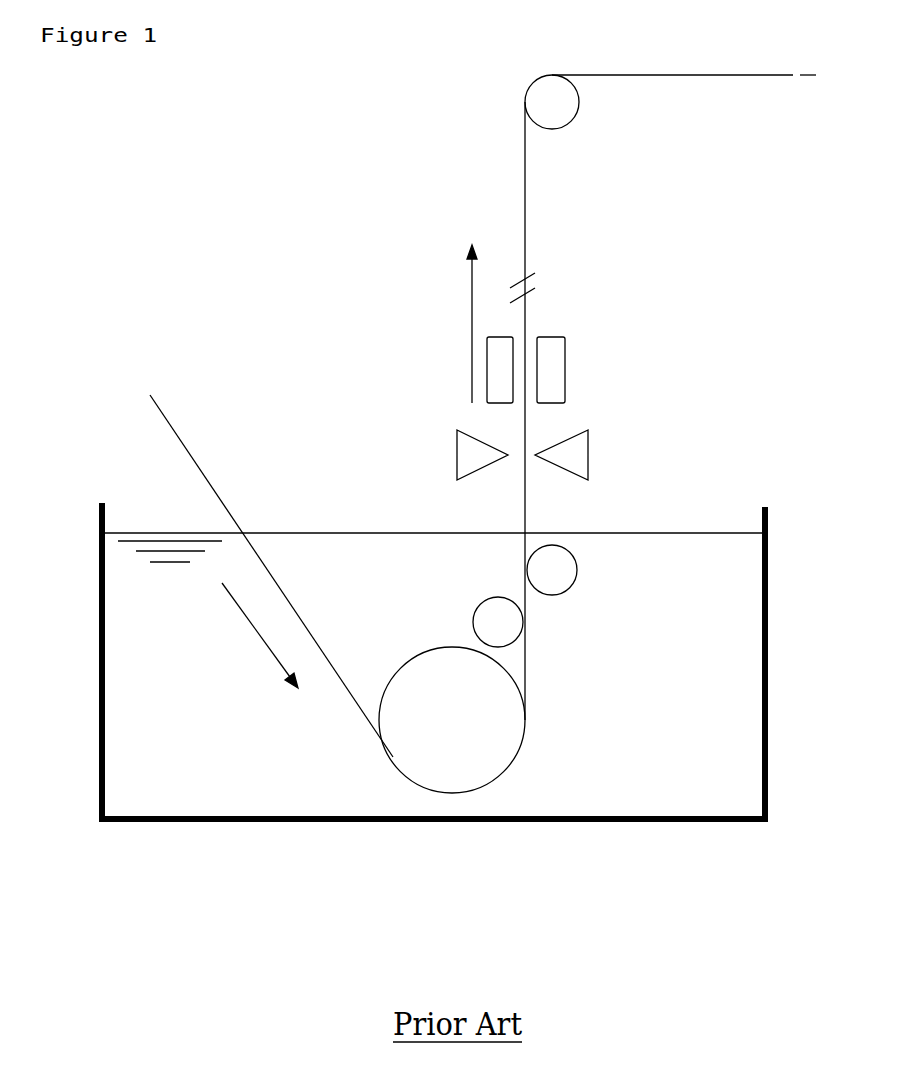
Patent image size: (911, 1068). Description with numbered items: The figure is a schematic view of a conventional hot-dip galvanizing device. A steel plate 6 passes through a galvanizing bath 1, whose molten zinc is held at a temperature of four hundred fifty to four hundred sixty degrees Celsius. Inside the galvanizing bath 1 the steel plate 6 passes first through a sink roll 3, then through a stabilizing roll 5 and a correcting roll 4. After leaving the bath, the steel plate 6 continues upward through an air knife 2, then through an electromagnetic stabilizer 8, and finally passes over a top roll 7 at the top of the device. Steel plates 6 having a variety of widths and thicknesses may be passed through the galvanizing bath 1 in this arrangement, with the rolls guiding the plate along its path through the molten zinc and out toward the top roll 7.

The galvanizing bath 1 is at (123, 695).
The air knife 2 is at (578, 443).
The sink roll 3 is at (445, 768).
The correcting roll 4 is at (557, 564).
The stabilizing roll 5 is at (491, 611).
The steel plate 6 is at (525, 185).
The top roll 7 is at (552, 102).
The electromagnetic stabilizer 8 is at (550, 346).